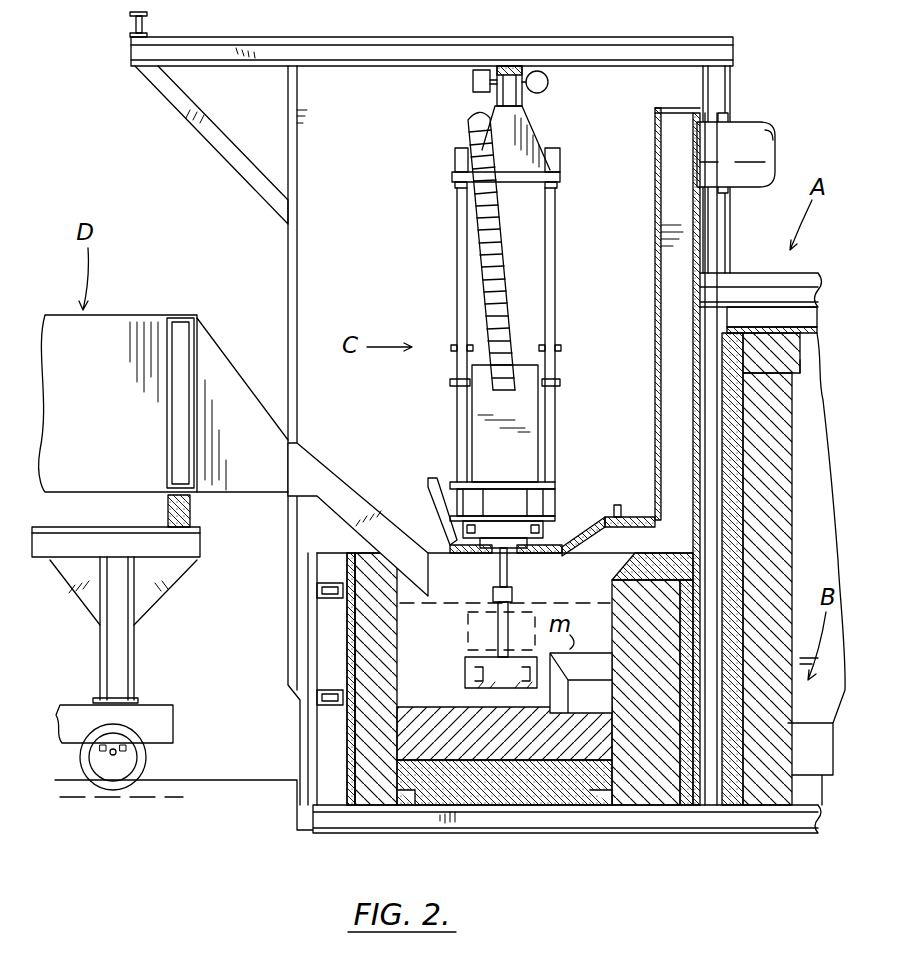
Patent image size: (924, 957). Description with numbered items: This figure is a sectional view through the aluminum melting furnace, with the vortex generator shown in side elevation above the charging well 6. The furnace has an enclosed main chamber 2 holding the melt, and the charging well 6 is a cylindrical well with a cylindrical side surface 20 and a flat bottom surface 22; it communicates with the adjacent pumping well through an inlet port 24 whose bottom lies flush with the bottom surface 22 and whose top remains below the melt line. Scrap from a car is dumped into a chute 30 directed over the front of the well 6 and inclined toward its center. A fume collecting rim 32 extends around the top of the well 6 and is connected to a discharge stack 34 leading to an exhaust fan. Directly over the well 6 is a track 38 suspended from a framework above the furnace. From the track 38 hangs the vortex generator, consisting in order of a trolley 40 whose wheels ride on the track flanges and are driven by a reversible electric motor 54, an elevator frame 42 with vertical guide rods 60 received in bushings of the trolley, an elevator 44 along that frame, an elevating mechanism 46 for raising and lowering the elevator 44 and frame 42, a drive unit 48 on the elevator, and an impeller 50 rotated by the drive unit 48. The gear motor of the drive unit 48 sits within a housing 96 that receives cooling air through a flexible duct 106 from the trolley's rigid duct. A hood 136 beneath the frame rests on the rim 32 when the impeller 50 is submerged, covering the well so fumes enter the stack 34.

The main chamber 2 is at (818, 510).
The charging well 6 is at (500, 700).
The cylindrical side surface 20 is at (400, 683).
The flat bottom surface 22 is at (440, 708).
The inlet port 24 is at (597, 687).
The chute 30 is at (335, 475).
The fume collecting rim 32 is at (437, 555).
The discharge stack 34 is at (680, 222).
The track 38 is at (510, 66).
The trolley 40 is at (545, 121).
The elevator frame 42 is at (563, 321).
The elevator 44 is at (569, 502).
The elevating mechanism 46 is at (573, 164).
The drive unit 48 is at (505, 497).
The impeller 50 is at (462, 678).
The reversible electric motor 54 is at (548, 86).
The vertical guide rods 60 is at (460, 305).
The housing 96 is at (538, 408).
The flexible duct 106 is at (483, 245).
The hood 136 is at (553, 560).